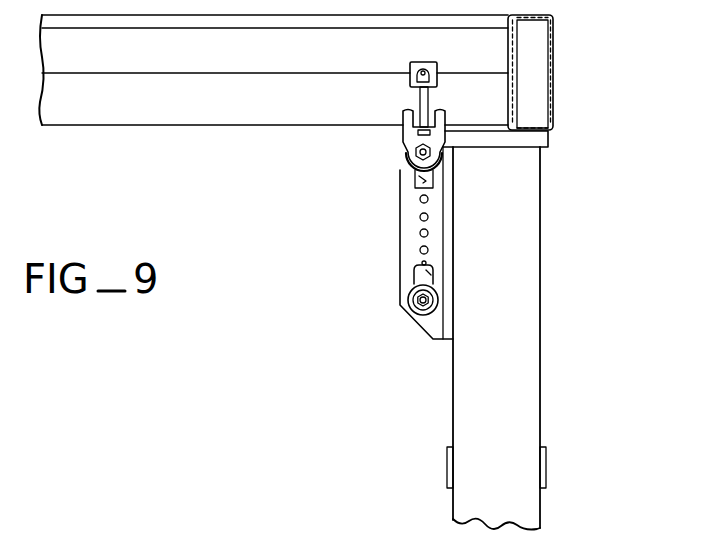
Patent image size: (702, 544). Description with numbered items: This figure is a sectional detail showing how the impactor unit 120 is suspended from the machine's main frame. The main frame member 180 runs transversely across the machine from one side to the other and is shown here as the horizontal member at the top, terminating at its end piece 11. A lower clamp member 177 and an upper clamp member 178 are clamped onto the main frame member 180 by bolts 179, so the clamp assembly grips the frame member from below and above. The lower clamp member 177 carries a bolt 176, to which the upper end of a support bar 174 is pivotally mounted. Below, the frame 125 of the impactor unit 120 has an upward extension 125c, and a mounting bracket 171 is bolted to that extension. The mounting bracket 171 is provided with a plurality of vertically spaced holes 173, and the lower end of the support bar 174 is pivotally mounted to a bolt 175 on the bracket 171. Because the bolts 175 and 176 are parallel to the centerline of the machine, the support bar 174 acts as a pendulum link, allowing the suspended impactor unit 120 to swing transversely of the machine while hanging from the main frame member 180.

The beam end cap 11 is at (555, 70).
The impactor unit 120 is at (571, 465).
The frame 125 is at (453, 506).
The upward extension 125c is at (478, 400).
The mounting bracket 171 is at (421, 329).
The vertically spaced holes 173 is at (419, 217).
The support bar 174 is at (414, 277).
The bolt 175 is at (410, 308).
The bolt 176 is at (407, 157).
The lower clamp member 177 is at (404, 138).
The upper clamp member 178 is at (410, 62).
The bolts 179 is at (420, 96).
The main frame member 180 is at (222, 72).